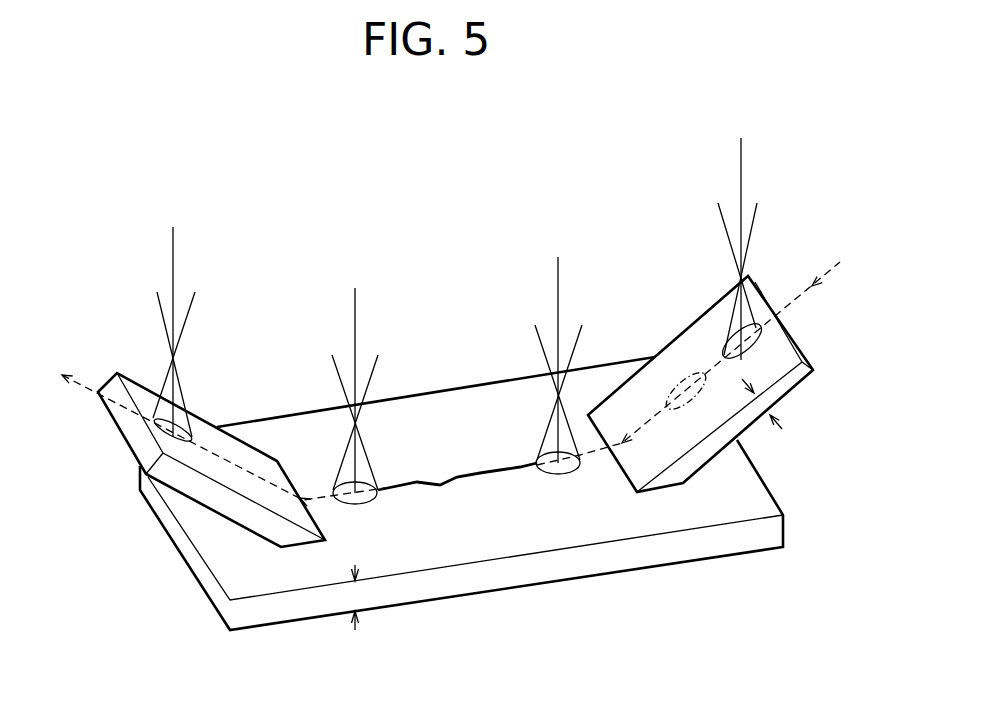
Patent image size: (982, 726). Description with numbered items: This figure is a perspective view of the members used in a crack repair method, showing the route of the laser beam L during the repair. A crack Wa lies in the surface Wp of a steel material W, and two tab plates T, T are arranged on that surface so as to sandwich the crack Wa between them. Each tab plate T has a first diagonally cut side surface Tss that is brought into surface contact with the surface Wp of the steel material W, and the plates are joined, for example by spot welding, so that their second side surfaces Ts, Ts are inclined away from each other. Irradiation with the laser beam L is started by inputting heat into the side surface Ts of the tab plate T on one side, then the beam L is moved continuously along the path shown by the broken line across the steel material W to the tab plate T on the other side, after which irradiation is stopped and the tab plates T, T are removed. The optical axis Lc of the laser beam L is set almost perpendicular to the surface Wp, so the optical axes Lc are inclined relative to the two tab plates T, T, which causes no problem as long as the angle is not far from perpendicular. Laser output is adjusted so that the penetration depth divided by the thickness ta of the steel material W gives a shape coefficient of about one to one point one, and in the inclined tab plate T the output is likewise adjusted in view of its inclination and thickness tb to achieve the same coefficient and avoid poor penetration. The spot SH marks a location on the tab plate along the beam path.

The steel material W is at (613, 575).
The crack Wa is at (442, 485).
The surface of the steel material Wp is at (505, 534).
The thickness of the steel material ta is at (350, 593).
The tab plate T is at (213, 498).
The second side surface Ts is at (135, 435).
The first diagonally cut side surface Tss is at (304, 549).
The thickness of the tab plate tb is at (765, 405).
The irradiation spot / scanning hole SH is at (680, 378).
The optical axis of the laser beam Lc is at (173, 242).
The laser beam L is at (190, 312).